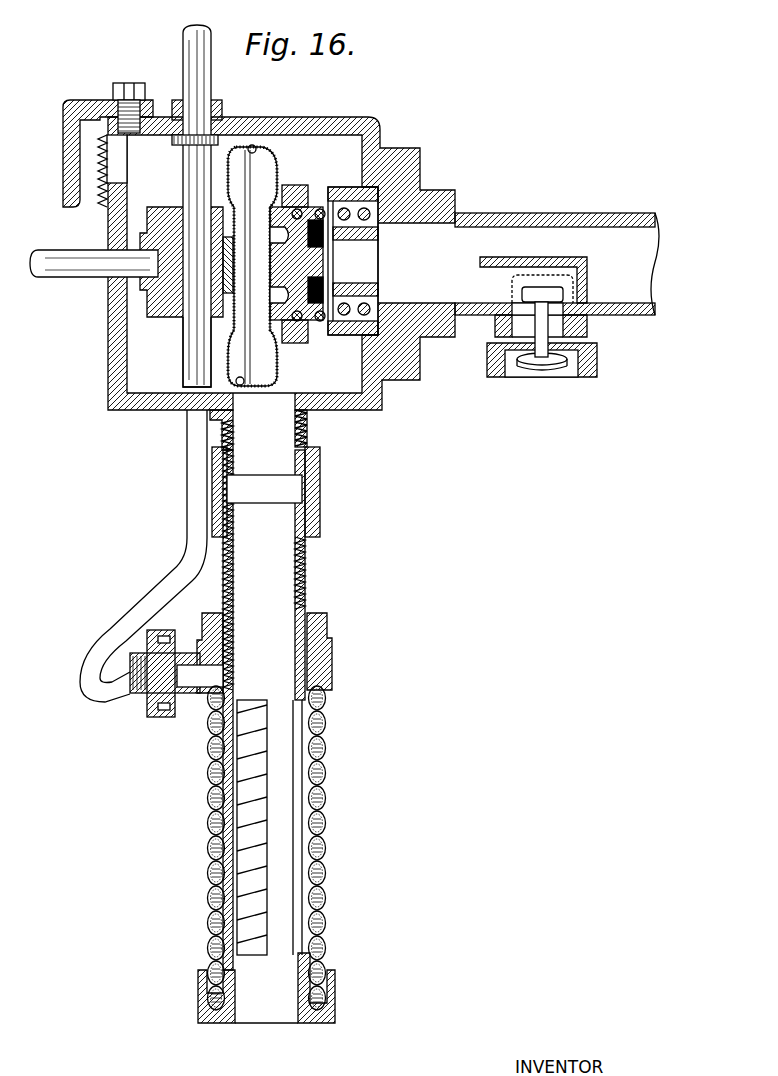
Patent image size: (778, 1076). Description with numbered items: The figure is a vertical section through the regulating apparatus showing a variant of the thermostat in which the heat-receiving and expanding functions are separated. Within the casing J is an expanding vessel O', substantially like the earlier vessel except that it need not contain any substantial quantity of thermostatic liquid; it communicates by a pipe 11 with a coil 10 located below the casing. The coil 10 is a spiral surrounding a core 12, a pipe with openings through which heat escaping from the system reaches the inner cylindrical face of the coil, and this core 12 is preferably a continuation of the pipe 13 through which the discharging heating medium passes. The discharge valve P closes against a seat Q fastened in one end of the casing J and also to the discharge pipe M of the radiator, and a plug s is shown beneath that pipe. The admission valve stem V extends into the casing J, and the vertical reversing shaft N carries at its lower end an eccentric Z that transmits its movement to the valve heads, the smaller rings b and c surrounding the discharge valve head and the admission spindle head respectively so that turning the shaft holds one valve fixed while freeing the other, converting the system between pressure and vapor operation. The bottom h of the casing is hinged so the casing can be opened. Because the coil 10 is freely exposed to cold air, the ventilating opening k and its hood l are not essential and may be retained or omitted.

The hood l is at (93, 100).
The reversing shaft N is at (190, 63).
The ventilating opening k is at (121, 178).
The ring c is at (167, 193).
The expanding vessel O' is at (274, 238).
The ring b is at (295, 185).
The casing J is at (281, 252).
The discharge valve P is at (315, 263).
The seat Q is at (363, 240).
The stem V is at (64, 262).
The eccentric Z is at (188, 305).
The bottom h is at (335, 405).
The discharge pipe M is at (632, 287).
The plug fitting s is at (538, 328).
The pipe 11 is at (170, 572).
The pipe 13 is at (283, 572).
The coil 10 is at (207, 803).
The core 12 is at (282, 833).